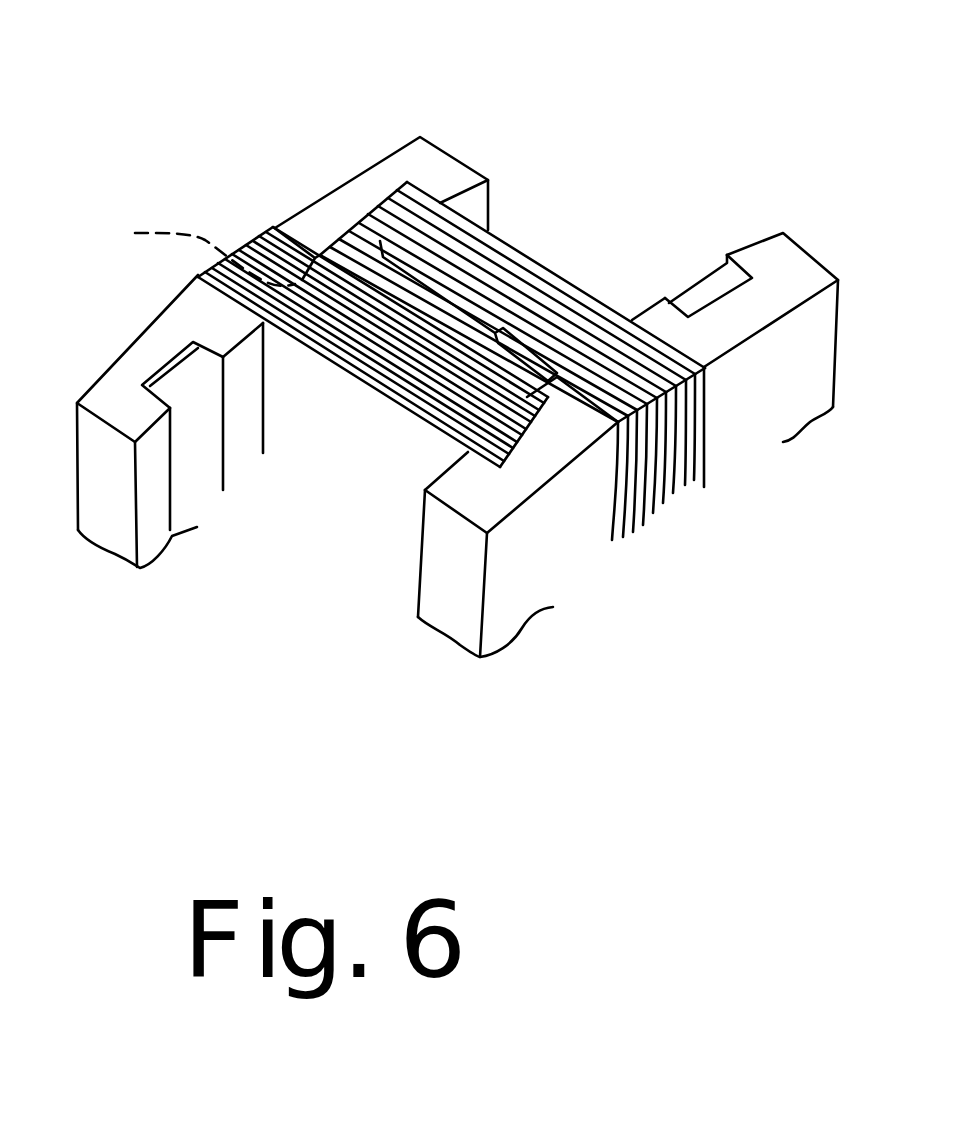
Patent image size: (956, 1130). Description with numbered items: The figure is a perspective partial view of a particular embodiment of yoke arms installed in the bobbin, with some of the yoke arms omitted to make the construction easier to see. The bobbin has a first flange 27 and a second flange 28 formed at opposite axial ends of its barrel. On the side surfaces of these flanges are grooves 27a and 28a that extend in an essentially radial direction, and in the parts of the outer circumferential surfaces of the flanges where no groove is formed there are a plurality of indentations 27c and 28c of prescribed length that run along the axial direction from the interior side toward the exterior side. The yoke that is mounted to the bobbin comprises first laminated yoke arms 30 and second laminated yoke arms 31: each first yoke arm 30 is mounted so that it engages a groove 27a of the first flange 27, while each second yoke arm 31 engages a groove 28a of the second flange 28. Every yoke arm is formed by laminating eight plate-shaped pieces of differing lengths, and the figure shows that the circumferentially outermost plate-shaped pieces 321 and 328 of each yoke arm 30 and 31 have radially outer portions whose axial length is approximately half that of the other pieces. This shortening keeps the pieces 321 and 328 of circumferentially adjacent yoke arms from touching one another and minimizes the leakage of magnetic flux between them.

The first flange 27 is at (342, 205).
The groove 27a is at (173, 248).
The indentation 27c is at (178, 380).
The second flange 28 is at (763, 263).
The groove 28a is at (682, 440).
The indentation 28c is at (698, 283).
The first laminated yoke arm 30 is at (235, 230).
The second laminated yoke arm 31 is at (507, 224).
The outermost plate-shaped piece 321 is at (197, 277).
The outermost plate-shaped piece 328 is at (273, 225).